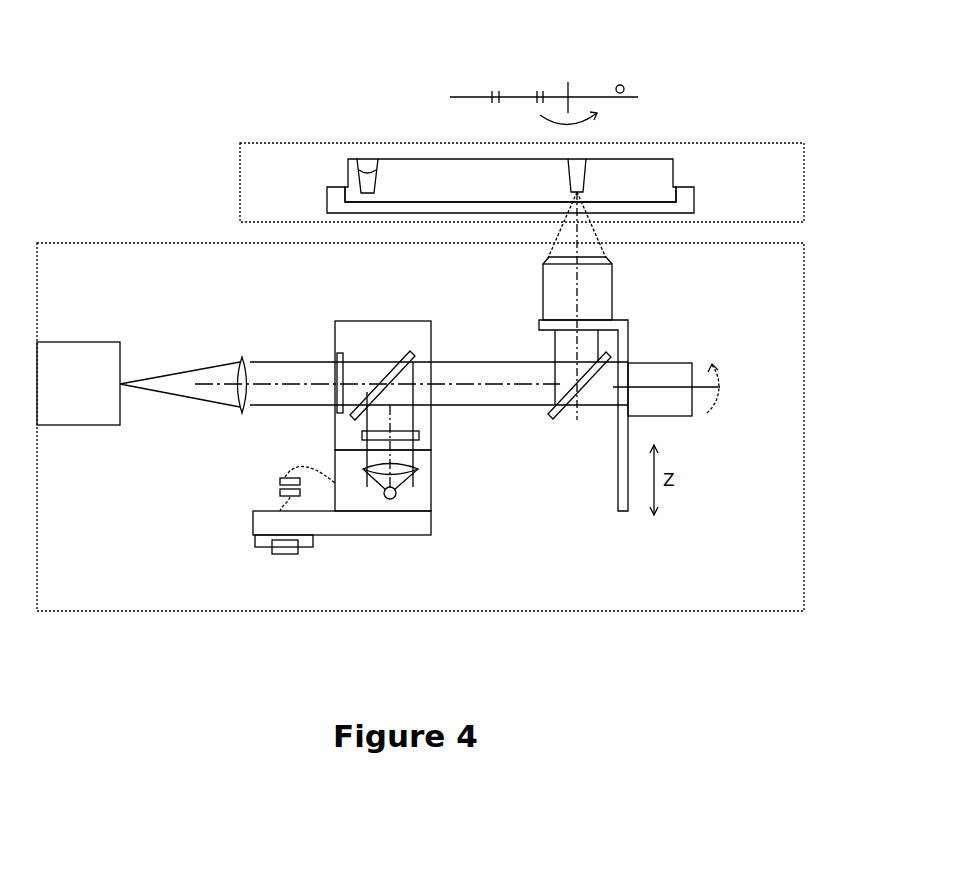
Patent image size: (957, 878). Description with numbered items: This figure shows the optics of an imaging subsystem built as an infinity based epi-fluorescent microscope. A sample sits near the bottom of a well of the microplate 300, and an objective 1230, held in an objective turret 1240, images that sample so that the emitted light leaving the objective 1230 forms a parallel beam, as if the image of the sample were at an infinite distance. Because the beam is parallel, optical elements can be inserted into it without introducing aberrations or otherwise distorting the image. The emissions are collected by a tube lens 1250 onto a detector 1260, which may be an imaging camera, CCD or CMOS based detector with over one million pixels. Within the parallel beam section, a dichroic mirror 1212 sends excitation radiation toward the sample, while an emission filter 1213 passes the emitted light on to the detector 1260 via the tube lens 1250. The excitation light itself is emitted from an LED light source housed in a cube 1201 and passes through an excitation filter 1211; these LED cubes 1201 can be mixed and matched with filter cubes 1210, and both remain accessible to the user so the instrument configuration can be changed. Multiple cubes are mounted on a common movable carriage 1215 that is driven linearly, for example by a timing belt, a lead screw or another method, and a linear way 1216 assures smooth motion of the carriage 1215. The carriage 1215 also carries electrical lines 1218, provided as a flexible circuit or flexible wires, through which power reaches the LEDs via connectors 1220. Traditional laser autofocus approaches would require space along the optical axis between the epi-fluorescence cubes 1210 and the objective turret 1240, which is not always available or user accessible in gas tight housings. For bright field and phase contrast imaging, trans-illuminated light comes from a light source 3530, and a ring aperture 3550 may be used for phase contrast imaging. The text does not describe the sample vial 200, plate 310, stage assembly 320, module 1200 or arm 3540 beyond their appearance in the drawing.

The sample vial 200 is at (369, 173).
The microplate 300 is at (673, 172).
The tray support plate 310 is at (694, 198).
The sample stage assembly 320 is at (804, 205).
The optical detection module 1200 is at (804, 300).
The cube 1201 is at (432, 483).
The filter cube 1210 is at (368, 320).
The excitation filter 1211 is at (421, 436).
The dichroic mirror 1212 is at (414, 352).
The emission filter 1213 is at (338, 350).
The movable carriage 1215 is at (362, 537).
The linear way 1216 is at (276, 555).
The electrical lines 1218 is at (278, 492).
The connectors 1220 is at (278, 480).
The objective 1230 is at (612, 287).
The objective turret 1240 is at (630, 340).
The tube lens 1250 is at (240, 358).
The detector 1260 is at (90, 342).
The light source 3530 is at (622, 85).
The arm 3540 is at (636, 97).
The ring aperture 3550 is at (530, 88).